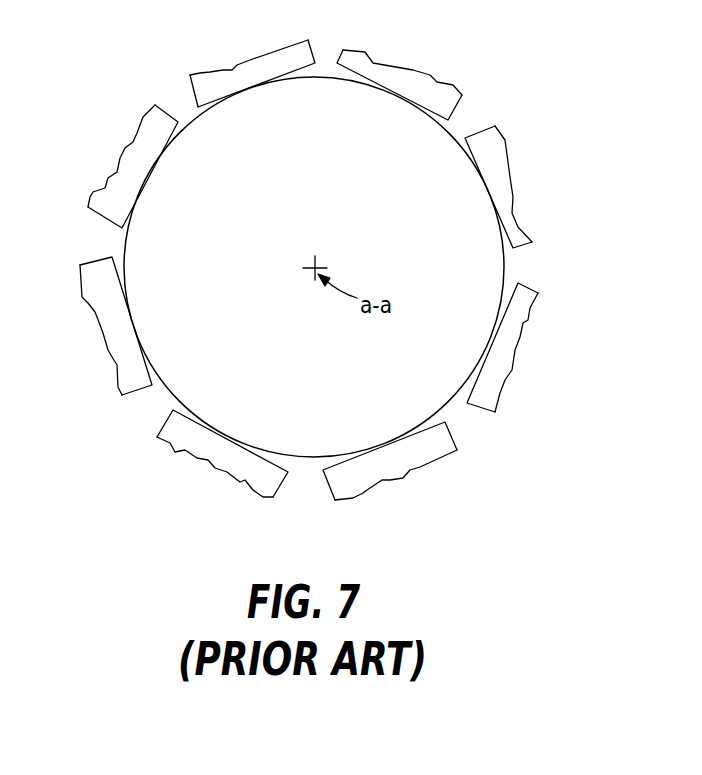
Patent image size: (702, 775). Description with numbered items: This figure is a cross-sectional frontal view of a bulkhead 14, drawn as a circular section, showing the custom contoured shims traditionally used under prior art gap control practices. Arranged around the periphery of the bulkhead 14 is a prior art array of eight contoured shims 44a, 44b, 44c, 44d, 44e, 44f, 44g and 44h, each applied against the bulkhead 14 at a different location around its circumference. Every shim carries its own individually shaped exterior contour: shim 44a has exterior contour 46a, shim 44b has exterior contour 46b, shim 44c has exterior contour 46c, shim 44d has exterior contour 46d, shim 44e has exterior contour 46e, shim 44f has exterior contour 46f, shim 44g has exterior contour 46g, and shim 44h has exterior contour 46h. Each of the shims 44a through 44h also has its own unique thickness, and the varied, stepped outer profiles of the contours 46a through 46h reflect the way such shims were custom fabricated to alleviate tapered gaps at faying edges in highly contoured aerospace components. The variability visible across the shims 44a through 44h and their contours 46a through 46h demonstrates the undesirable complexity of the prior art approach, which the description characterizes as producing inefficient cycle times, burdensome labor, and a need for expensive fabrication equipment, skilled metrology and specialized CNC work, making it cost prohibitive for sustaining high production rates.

The bulkhead 14 is at (453, 137).
The contoured shim 44a is at (373, 63).
The exterior contour 46a is at (437, 82).
The contoured shim 44b is at (492, 163).
The exterior contour 46b is at (513, 215).
The contoured shim 44c is at (512, 332).
The exterior contour 46c is at (508, 385).
The contoured shim 44d is at (413, 450).
The exterior contour 46d is at (363, 492).
The contoured shim 44e is at (245, 468).
The exterior contour 46e is at (187, 453).
The contoured shim 44f is at (118, 357).
The exterior contour 46f is at (95, 312).
The contoured shim 44g is at (117, 198).
The exterior contour 46g is at (133, 142).
The contoured shim 44h is at (228, 78).
The exterior contour 46h is at (283, 45).